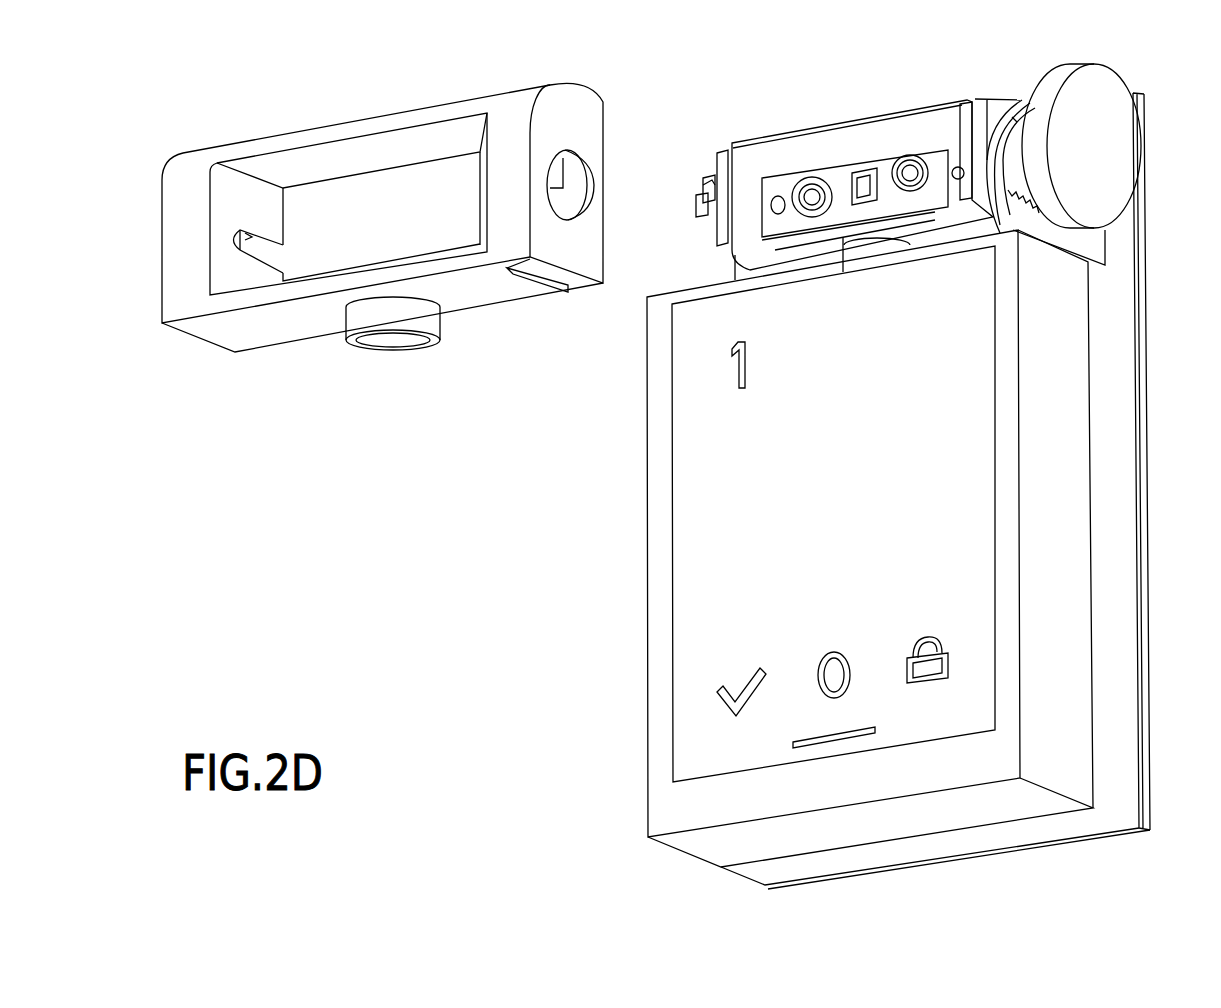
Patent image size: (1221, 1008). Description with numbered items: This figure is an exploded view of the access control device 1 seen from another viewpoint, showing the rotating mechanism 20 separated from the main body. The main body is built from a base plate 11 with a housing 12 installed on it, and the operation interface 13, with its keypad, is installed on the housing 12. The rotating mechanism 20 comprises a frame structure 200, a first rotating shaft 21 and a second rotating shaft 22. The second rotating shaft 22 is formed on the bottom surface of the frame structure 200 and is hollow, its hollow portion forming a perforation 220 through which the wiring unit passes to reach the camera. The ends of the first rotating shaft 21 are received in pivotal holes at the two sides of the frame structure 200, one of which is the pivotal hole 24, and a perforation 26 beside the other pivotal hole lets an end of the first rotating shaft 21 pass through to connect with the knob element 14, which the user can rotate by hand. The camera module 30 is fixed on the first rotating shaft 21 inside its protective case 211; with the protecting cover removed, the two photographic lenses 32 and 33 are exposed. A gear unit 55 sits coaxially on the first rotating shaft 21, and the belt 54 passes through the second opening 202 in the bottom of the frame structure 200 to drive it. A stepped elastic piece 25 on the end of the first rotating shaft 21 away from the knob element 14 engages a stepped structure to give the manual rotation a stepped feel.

The access control device 1 is at (712, 58).
The base plate 11 is at (1120, 582).
The housing 12 is at (663, 690).
The operation interface 13 is at (700, 537).
The knob element 14 is at (1125, 167).
The rotating mechanism 20 is at (180, 187).
The frame structure 200 is at (332, 136).
The second opening 202 is at (545, 280).
The first rotating shaft 21 is at (700, 222).
The protective case 211 is at (913, 108).
The second rotating shaft 22 is at (430, 318).
The perforation 220 is at (395, 340).
The pivotal hole 24 is at (263, 255).
The stepped elastic piece 25 is at (712, 183).
The perforation 26 is at (568, 193).
The camera module 30 is at (845, 172).
The photographic lens 32 is at (907, 170).
The photographic lens 33 is at (773, 180).
The belt 54 is at (1005, 225).
The gear unit 55 is at (1023, 100).